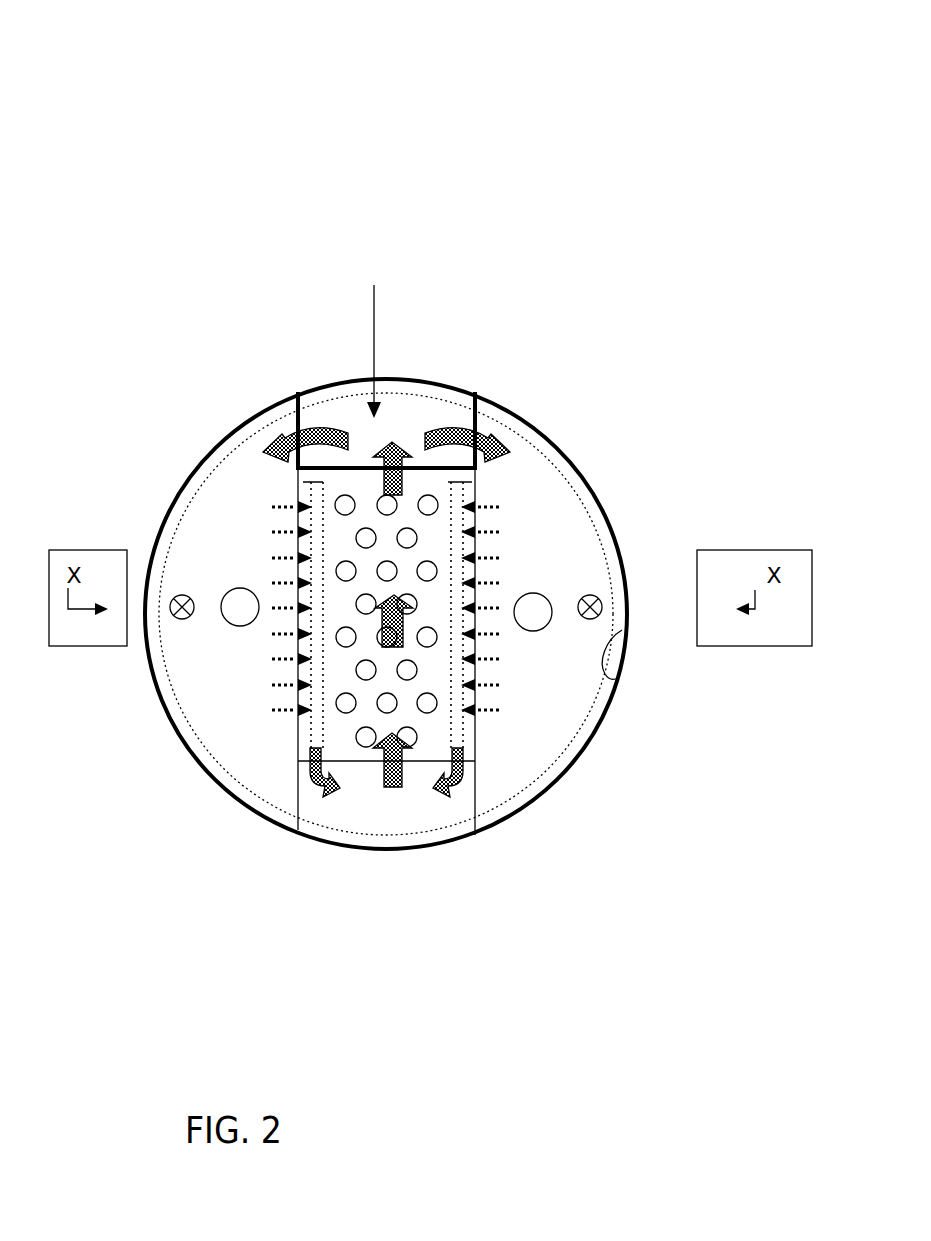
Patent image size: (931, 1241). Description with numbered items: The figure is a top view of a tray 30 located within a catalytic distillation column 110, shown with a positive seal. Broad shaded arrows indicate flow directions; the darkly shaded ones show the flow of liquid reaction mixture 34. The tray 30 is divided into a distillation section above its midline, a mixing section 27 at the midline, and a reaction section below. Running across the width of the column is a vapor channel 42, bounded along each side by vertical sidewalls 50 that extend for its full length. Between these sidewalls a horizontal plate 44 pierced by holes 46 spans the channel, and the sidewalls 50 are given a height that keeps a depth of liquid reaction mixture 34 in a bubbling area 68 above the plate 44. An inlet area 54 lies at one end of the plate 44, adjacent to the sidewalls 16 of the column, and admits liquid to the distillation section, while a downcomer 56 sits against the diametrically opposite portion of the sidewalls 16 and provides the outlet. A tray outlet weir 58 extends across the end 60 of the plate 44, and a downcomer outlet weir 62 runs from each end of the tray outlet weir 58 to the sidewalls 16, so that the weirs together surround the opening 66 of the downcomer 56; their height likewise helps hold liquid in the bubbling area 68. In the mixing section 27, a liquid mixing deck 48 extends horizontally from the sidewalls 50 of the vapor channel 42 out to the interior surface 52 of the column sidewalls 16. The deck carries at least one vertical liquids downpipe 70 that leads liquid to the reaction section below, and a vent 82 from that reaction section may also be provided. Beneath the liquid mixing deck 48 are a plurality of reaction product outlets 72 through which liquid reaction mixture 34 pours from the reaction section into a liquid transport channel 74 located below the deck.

The catalytic distillation column 110 is at (205, 146).
The tray 30 is at (731, 414).
The liquid mixing deck 48 is at (535, 537).
The tray outlet weir 58 is at (362, 458).
The holes 46 is at (345, 632).
The vertical sidewalls 50 is at (478, 783).
The inlet area 54 is at (335, 830).
The liquid transport channel 74 is at (317, 625).
The reaction product outlets 72 is at (288, 610).
The bubbling area 68 is at (403, 690).
The horizontal plates 44 is at (345, 668).
The vapor channel 42 is at (373, 890).
The liquid reaction mixture 34 is at (413, 467).
The downcomer outlet weir 62 is at (290, 443).
The opening 66 is at (440, 422).
The end of plate 60 is at (445, 465).
The downcomer 56 is at (374, 285).
The vertical liquids downpipe 70 is at (250, 612).
The vent 82 is at (178, 597).
The mixing section 27 is at (195, 557).
The sidewalls 16 is at (563, 683).
The interior surface 52 is at (620, 630).